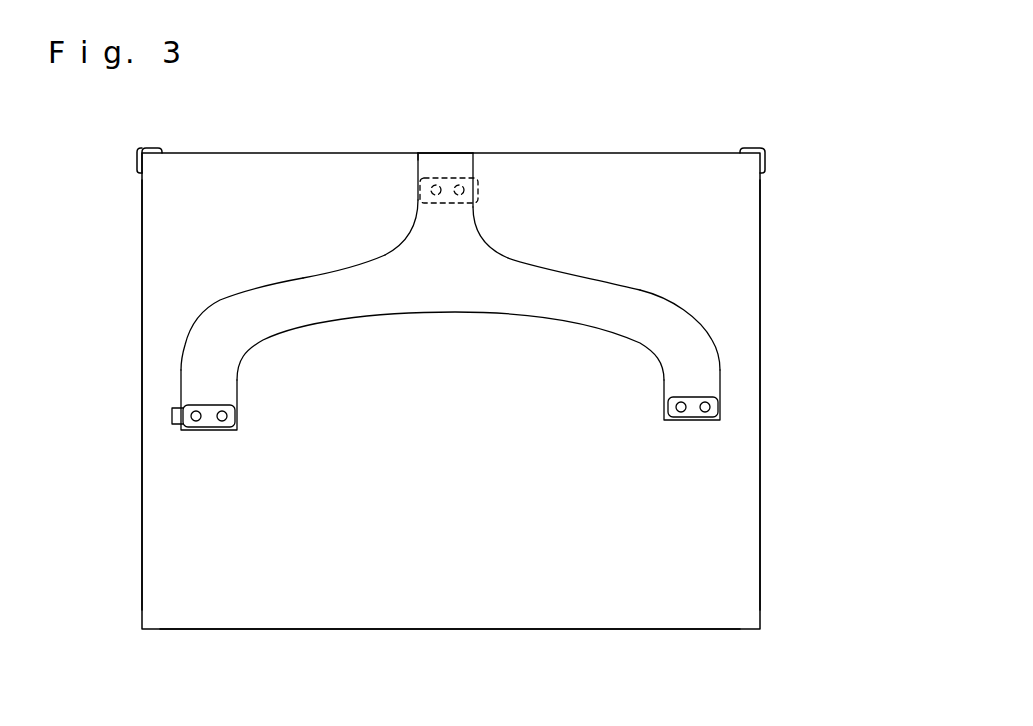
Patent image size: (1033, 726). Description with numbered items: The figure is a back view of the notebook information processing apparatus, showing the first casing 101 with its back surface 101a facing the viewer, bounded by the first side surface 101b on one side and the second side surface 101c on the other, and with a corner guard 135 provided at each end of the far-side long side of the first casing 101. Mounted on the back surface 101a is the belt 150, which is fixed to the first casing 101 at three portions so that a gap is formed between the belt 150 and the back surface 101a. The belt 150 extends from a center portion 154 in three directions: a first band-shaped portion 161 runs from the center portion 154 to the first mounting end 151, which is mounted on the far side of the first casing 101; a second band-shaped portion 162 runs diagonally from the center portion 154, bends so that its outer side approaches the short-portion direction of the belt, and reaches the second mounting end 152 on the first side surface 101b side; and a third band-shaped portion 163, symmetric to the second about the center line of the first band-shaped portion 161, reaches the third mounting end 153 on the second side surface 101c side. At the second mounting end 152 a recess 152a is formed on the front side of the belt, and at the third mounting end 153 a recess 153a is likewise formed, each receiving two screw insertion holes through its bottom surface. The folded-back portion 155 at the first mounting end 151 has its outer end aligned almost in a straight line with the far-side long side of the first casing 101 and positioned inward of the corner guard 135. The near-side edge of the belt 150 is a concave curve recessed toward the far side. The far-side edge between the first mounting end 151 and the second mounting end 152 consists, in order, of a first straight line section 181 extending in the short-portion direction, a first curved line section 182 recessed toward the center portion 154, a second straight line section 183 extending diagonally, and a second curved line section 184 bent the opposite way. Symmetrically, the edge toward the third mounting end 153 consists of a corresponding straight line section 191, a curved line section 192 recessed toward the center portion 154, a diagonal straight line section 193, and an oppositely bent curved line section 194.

The first casing 101 is at (570, 630).
The back surface 101a is at (376, 600).
The first side surface 101b is at (762, 498).
The second side surface 101c is at (142, 455).
The corner guard 135 is at (148, 148).
The belt 150 is at (416, 300).
The first mounting end 151 is at (480, 188).
The second mounting end 152 is at (633, 465).
The recess 152a is at (688, 408).
The third mounting end 153 is at (267, 469).
The recess 153a is at (208, 418).
The center portion 154 is at (457, 285).
The folded-back portion 155 is at (443, 153).
The first band-shaped portion 161 is at (440, 170).
The second band-shaped portion 162 is at (620, 256).
The third band-shaped portion 163 is at (241, 258).
The No. 1-1 straight line section 181 is at (475, 165).
The No. 1-1 curved line section 182 is at (490, 235).
The No. 1-2 straight line section 183 is at (622, 284).
The No. 1-2 curved line section 184 is at (694, 316).
The No. 2-1 straight line section 191 is at (417, 172).
The No. 2-1 curved line section 192 is at (407, 227).
The No. 2-2 straight line section 193 is at (280, 282).
The No. 2-2 curved line section 194 is at (185, 342).